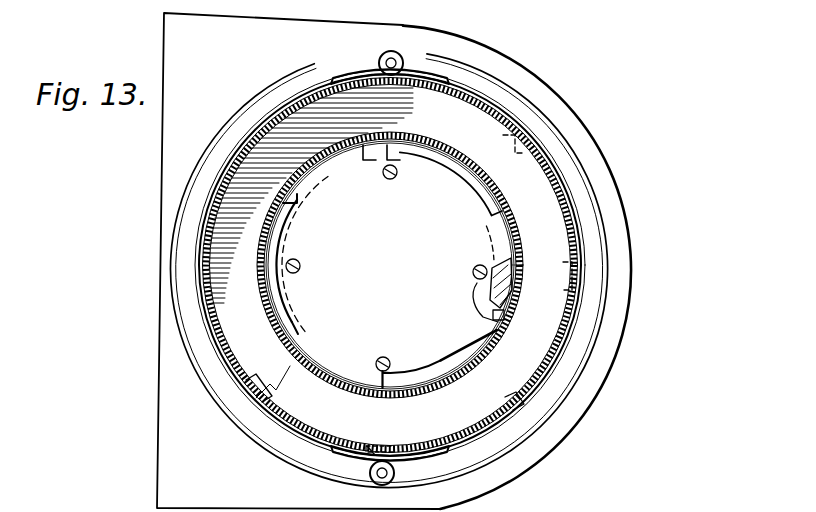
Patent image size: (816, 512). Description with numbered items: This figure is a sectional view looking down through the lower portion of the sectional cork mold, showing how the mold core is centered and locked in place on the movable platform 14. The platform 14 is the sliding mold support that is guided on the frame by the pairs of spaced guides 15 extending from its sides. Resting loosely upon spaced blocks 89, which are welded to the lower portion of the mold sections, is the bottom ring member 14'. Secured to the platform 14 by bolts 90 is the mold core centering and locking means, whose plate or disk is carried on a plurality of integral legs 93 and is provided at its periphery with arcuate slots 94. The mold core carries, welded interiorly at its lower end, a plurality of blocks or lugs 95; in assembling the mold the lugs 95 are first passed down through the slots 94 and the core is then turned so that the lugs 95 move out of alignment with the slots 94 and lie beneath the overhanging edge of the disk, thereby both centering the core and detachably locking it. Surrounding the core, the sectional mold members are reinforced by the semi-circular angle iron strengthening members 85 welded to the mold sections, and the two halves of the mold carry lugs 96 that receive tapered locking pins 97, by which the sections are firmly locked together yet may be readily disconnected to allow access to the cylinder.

The sliding platform 14 is at (549, 267).
The bottom ring member 14' is at (434, 265).
The guides 15 is at (310, 334).
The semi-circular angle iron strengthening members 85 is at (588, 220).
The spaced blocks 89 is at (262, 398).
The bolts 90 is at (300, 264).
The integral legs 93 is at (513, 283).
The arcuate slots 94 is at (448, 350).
The blocks or lugs 95 is at (505, 316).
The lugs 96 is at (372, 452).
The tapered locking pins 97 is at (390, 454).